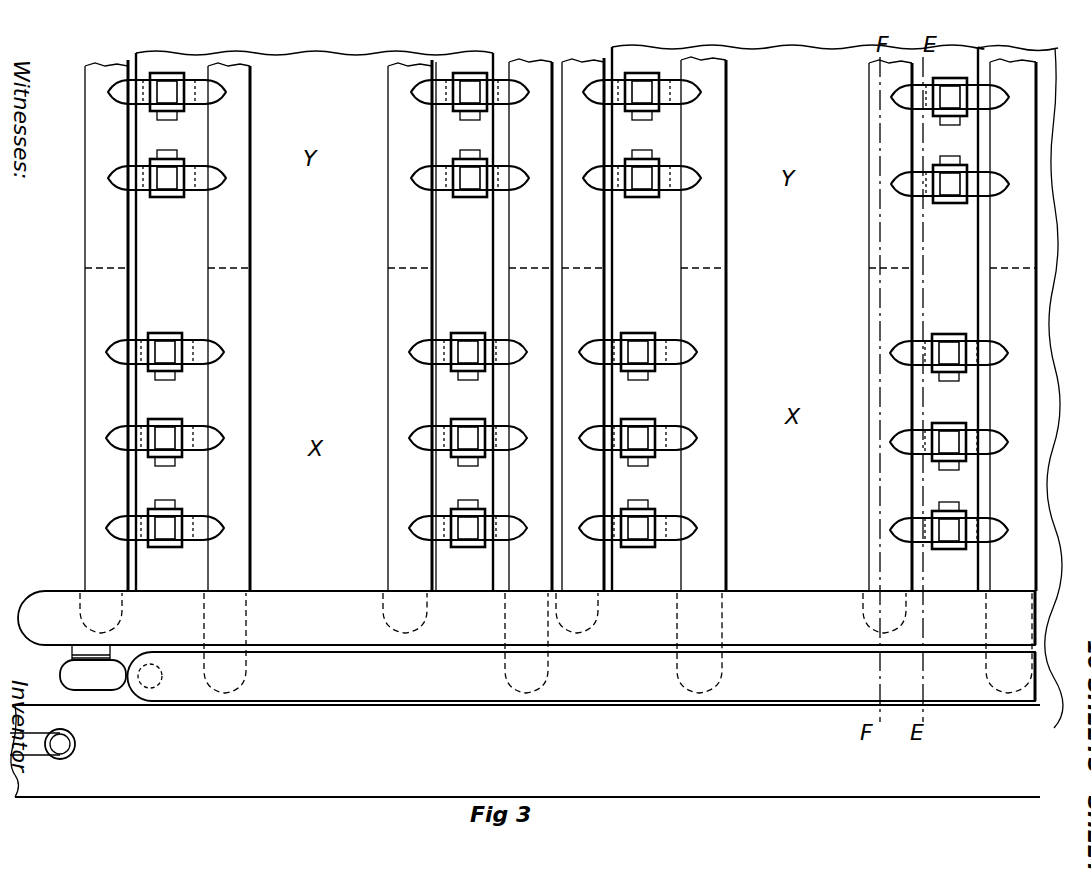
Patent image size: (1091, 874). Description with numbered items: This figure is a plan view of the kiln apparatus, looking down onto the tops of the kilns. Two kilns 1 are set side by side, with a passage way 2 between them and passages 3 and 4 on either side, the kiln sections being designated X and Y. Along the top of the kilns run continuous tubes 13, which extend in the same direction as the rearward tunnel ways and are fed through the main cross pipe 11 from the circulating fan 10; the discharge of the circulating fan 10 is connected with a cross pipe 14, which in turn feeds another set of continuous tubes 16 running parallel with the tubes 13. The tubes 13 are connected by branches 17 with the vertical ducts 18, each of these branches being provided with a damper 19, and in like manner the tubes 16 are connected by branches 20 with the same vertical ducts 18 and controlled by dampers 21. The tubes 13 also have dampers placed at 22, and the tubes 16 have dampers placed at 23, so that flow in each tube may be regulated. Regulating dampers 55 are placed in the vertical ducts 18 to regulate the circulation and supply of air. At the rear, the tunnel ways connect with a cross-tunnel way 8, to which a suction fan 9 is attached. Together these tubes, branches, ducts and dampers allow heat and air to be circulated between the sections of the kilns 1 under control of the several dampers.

The kiln proper 1 is at (541, 422).
The passage way 2 is at (602, 568).
The passage 3 is at (1045, 268).
The passage 4 is at (78, 407).
The cross-tunnel way 8 is at (273, 783).
The suction fan 9 is at (32, 736).
The circulating fan 10 is at (62, 682).
The main cross pipe 11 is at (180, 702).
The continuous tubes 13 is at (242, 530).
The cross pipe 14 is at (53, 590).
The continuous tubes 16 is at (90, 497).
The branches 17 is at (198, 176).
The vertical ducts 18 is at (178, 190).
The damper 19 is at (198, 426).
The branches 20 is at (118, 176).
The dampers 21 is at (143, 108).
The dampers 22 is at (245, 268).
The dampers 23 is at (88, 270).
The regulating damper 55 is at (460, 501).